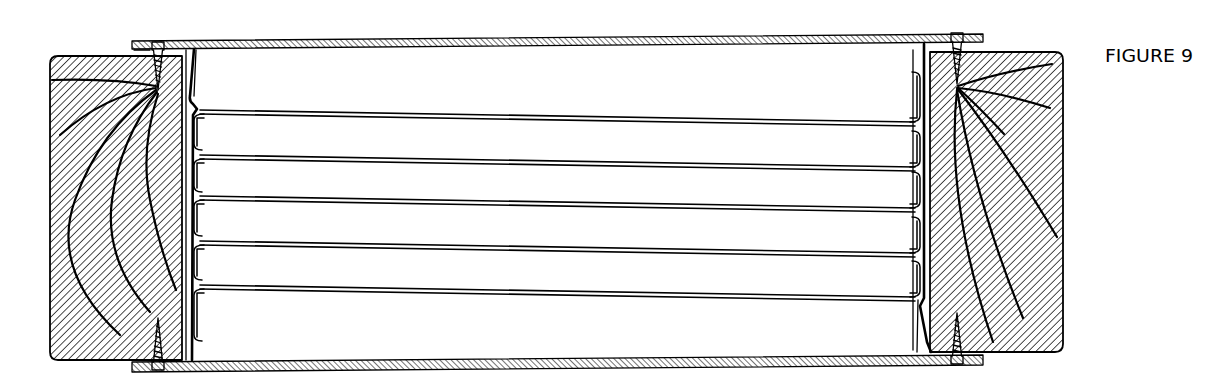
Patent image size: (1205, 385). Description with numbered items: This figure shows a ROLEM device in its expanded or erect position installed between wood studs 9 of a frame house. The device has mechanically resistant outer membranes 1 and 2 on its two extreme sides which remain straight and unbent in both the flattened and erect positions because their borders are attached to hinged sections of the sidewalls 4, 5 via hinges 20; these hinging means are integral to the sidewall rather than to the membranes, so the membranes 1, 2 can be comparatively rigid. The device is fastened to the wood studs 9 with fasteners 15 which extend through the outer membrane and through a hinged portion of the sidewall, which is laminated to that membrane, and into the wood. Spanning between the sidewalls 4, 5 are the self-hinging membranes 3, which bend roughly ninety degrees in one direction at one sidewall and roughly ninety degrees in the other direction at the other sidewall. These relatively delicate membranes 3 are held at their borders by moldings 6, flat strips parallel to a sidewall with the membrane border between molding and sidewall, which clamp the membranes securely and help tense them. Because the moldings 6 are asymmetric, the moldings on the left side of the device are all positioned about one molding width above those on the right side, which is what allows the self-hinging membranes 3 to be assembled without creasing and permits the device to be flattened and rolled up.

The membrane 1 is at (335, 48).
The membrane 2 is at (370, 364).
The self-hinging membrane 3 is at (542, 289).
The sidewall 4 is at (199, 88).
The sidewall 5 is at (920, 305).
The molding 6 is at (204, 292).
The wood stud 9 is at (1074, 201).
The fastener 15 is at (152, 72).
The hinge 20 is at (196, 60).